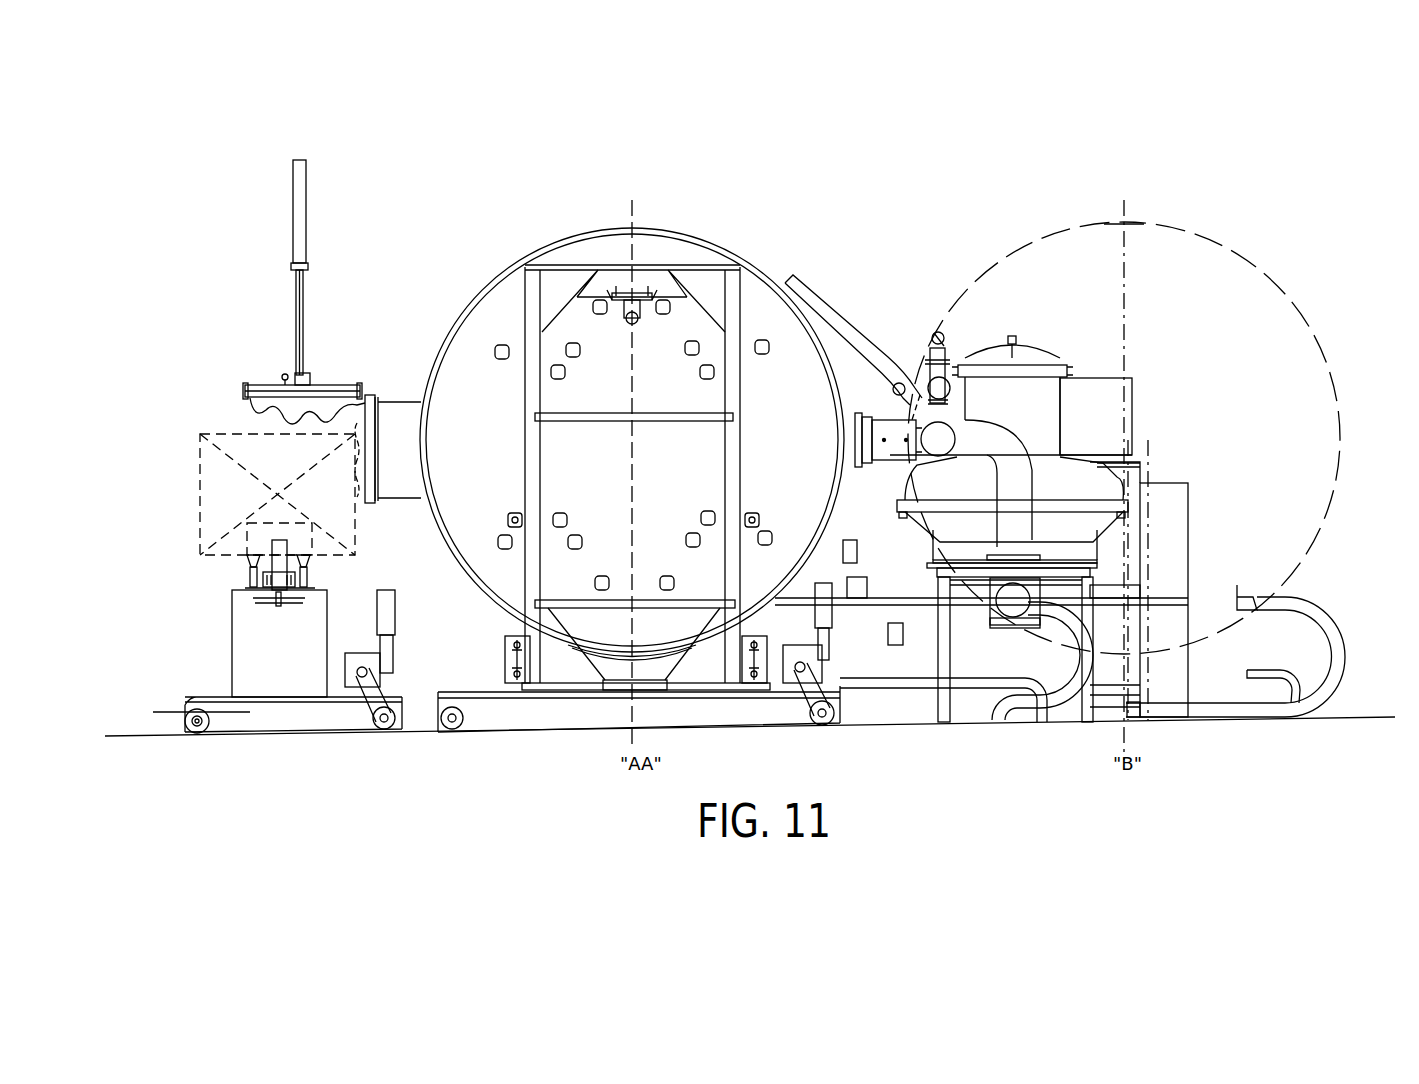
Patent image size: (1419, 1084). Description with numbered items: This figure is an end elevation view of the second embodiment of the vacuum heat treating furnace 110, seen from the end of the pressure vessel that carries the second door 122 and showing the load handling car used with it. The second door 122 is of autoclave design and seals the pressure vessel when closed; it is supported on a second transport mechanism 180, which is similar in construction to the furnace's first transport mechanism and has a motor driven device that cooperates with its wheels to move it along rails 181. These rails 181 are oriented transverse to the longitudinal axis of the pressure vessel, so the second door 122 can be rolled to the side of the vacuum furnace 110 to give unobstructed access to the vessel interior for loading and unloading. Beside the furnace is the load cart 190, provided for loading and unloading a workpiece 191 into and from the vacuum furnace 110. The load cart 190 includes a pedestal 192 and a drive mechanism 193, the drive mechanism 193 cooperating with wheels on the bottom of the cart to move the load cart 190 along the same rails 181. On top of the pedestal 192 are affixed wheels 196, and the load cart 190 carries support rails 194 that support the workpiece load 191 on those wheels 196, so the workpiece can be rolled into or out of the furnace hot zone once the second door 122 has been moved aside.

The vacuum heat treating furnace 110 is at (594, 226).
The second door 122 is at (796, 352).
The second transport mechanism 180 is at (533, 355).
The rails 181 is at (953, 727).
The load cart 190 is at (165, 586).
The workpiece 191 is at (205, 510).
The pedestal 192 is at (233, 650).
The drive mechanism 193 is at (400, 663).
The support rails 194 is at (247, 557).
The wheels 196 is at (247, 578).